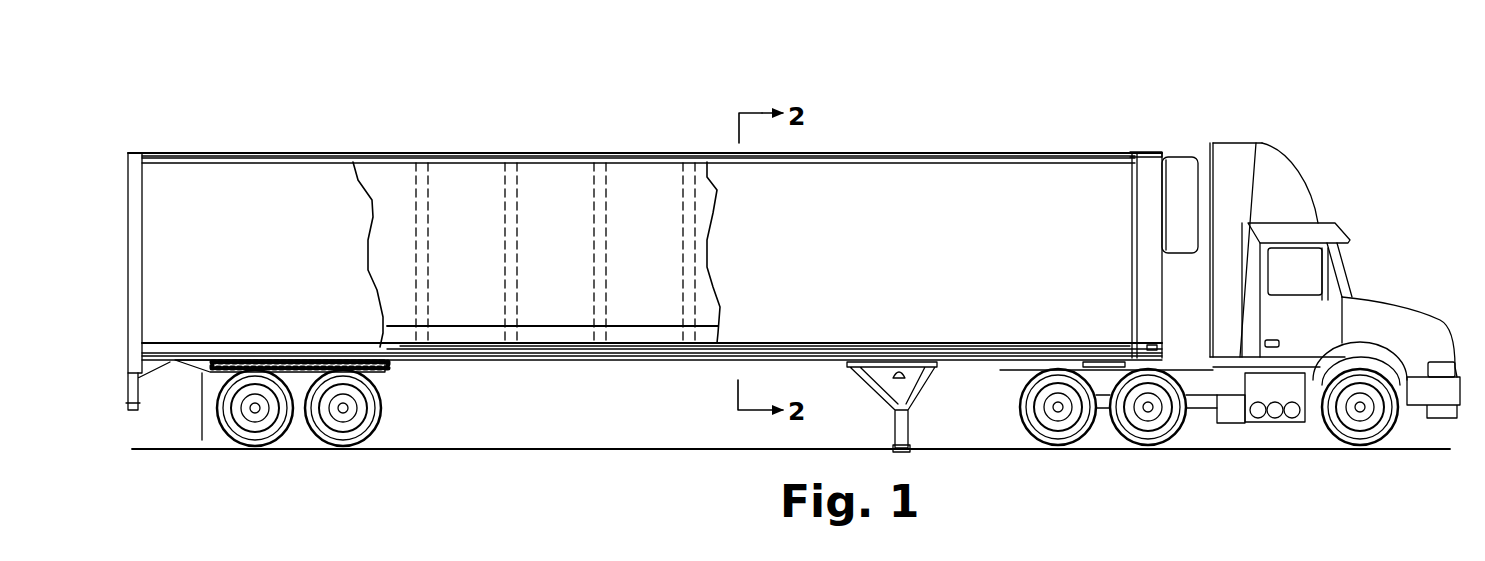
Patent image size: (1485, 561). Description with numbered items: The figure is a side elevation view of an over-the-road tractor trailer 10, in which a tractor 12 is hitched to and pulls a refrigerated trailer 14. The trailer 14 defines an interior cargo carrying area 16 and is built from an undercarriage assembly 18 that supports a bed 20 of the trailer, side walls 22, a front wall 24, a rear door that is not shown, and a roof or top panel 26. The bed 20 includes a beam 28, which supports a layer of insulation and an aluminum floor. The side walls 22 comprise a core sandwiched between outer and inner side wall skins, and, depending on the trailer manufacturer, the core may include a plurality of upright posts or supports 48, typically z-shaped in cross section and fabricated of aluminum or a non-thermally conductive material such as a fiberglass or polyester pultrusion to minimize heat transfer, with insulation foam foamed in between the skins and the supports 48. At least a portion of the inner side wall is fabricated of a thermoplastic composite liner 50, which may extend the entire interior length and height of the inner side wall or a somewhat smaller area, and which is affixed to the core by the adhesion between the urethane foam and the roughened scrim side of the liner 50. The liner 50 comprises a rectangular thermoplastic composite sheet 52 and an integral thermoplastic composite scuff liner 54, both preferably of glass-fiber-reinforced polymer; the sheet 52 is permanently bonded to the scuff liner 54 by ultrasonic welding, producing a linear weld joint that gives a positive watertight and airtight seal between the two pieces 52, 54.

The over-the-road tractor trailer 10 is at (1200, 121).
The tractor 12 is at (1334, 194).
The refrigerated trailer 14 is at (824, 146).
The interior cargo carrying area 16 is at (562, 230).
The undercarriage assembly 18 is at (546, 366).
The bed 20 is at (591, 359).
The side walls 22 is at (740, 300).
The front wall 24 is at (1162, 297).
The roof or top panel 26 is at (625, 153).
The beam 28 is at (633, 348).
The upright posts or supports 48 is at (510, 193).
The thermoplastic composite liner 50 is at (468, 222).
The thermoplastic composite sheet 52 is at (395, 222).
The scuff liner 54 is at (482, 331).